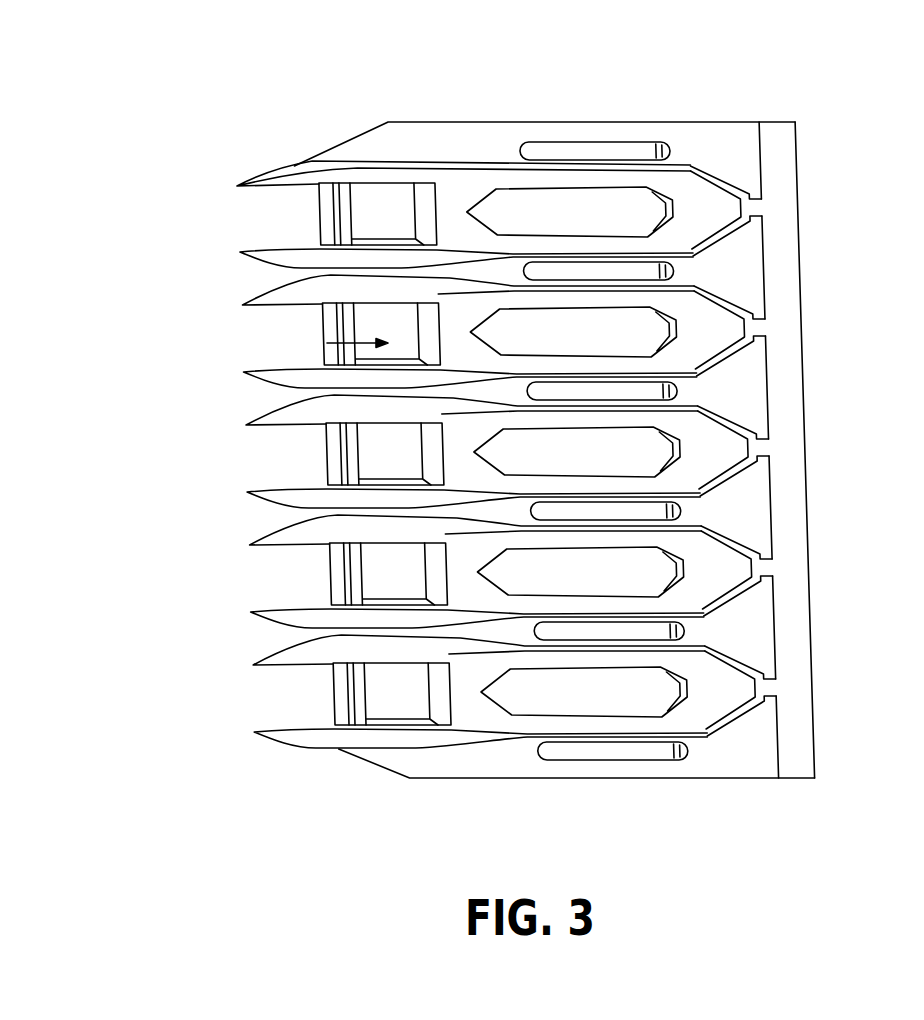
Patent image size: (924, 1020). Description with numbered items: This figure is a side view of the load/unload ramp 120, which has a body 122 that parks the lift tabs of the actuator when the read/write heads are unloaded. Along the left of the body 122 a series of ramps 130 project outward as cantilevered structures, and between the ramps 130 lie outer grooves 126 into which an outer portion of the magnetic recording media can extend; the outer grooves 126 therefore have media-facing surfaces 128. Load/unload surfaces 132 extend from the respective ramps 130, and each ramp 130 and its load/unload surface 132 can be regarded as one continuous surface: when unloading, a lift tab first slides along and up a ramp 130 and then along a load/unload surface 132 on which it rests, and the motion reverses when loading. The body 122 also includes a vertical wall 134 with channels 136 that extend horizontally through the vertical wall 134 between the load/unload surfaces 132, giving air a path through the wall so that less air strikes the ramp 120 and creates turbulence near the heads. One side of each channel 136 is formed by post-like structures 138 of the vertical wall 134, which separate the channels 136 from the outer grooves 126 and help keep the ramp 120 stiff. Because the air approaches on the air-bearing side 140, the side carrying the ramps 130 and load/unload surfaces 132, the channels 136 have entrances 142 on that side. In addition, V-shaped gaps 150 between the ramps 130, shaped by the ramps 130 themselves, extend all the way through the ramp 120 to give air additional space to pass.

The ramp 120 is at (133, 80).
The body 122 is at (637, 130).
The outer grooves 126 is at (196, 194).
The media-facing surfaces 128 is at (240, 192).
The ramps 130 is at (288, 172).
The load/unload surfaces 132 is at (470, 165).
The vertical wall 134 is at (745, 277).
The channels 136 is at (327, 343).
The post-like structures 138 is at (337, 453).
The air-bearing side 140 is at (712, 457).
The entrances 142 is at (357, 325).
The gaps 150 is at (244, 649).